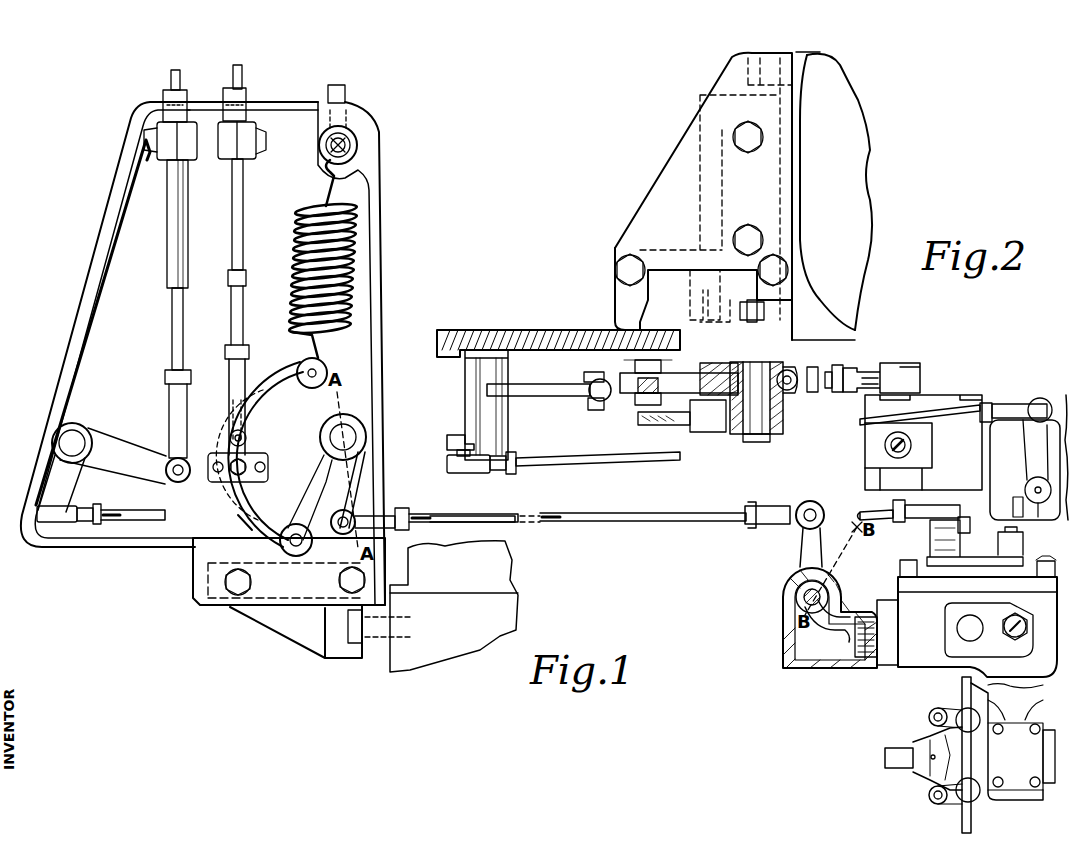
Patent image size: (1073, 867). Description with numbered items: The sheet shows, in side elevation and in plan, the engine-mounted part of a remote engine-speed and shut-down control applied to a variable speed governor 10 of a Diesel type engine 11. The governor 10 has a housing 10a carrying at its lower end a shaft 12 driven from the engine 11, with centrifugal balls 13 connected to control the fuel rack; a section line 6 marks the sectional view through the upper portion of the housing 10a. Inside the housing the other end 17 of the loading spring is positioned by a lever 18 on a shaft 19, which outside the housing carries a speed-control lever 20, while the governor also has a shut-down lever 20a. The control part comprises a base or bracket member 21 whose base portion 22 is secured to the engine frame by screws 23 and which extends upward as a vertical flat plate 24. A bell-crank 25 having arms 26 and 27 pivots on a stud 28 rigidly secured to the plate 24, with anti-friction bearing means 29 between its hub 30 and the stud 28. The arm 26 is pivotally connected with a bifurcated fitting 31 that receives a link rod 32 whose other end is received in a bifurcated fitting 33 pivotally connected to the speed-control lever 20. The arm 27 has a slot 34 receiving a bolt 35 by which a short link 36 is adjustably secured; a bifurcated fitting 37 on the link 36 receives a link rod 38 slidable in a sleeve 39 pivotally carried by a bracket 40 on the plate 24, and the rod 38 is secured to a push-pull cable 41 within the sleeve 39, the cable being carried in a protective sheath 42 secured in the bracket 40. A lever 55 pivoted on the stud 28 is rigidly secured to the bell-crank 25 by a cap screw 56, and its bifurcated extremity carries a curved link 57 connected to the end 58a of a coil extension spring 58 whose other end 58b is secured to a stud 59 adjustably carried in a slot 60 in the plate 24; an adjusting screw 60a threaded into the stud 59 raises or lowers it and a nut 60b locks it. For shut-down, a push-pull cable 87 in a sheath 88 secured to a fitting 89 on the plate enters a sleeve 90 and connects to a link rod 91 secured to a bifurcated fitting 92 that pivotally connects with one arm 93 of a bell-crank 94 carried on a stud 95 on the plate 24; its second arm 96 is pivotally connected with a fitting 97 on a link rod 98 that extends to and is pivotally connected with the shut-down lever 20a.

In FIG. 2, the section line 6- 6 is at (702, 638).
In FIG. 2, the variable speed governor 10 is at (816, 724).
In FIG. 2, the housing 10a is at (933, 660).
In FIG. 1, the Diesel type engine 11 is at (490, 558).
In FIG. 2, the Diesel type engine 11 is at (860, 312).
In FIG. 2, the shaft 12 is at (884, 754).
In FIG. 2, the centrifugal balls 13 is at (955, 710).
In FIG. 2, the other end of the coil spring 17 is at (862, 660).
In FIG. 2, the lever 18 is at (827, 633).
In FIG. 2, the shaft 19 is at (796, 597).
In FIG. 2, the speed-control lever 20 is at (800, 545).
In FIG. 2, the shut-down lever 20a is at (1035, 460).
In FIG. 1, the base or bracket member 21 is at (394, 271).
In FIG. 2, the base or bracket member 21 is at (492, 326).
In FIG. 1, the base portion 22 is at (278, 620).
In FIG. 1, the screws 23 is at (356, 642).
In FIG. 1, the vertical flat plate 24 is at (130, 300).
In FIG. 2, the vertical flat plate 24 is at (560, 338).
In FIG. 1, the bell-crank 25 is at (376, 452).
In FIG. 1, the arm 26 is at (370, 480).
In FIG. 1, the arm 27 is at (263, 454).
In FIG. 2, the arm 27 is at (684, 373).
In FIG. 1, the stud 28 is at (358, 430).
In FIG. 2, the stud 28 is at (752, 430).
In FIG. 2, the anti-friction bearing means 29 is at (792, 368).
In FIG. 2, the hub 30 is at (722, 366).
In FIG. 1, the bifurcated fitting 31 is at (398, 514).
In FIG. 2, the bifurcated fitting 31 is at (808, 392).
In FIG. 1, the link rod 32 is at (460, 512).
In FIG. 2, the link rod 32 is at (466, 515).
In FIG. 2, the bifurcated fitting 33 is at (873, 366).
In FIG. 1, the slot 34 is at (272, 462).
In FIG. 1, the bolt 35 is at (234, 448).
In FIG. 2, the bolt 35 is at (640, 405).
In FIG. 1, the short link 36 is at (236, 478).
In FIG. 2, the short link 36 is at (660, 400).
In FIG. 1, the bifurcated fitting 37 is at (232, 392).
In FIG. 1, the link rod 38 is at (246, 310).
In FIG. 1, the sleeve 39 is at (244, 226).
In FIG. 1, the bracket 40 is at (250, 152).
In FIG. 1, the push-pull cable 41 is at (242, 76).
In FIG. 1, the protective sheath 42 is at (248, 96).
In FIG. 1, the lever 55 is at (322, 530).
In FIG. 2, the lever 55 is at (708, 432).
In FIG. 1, the cap screw 56 is at (318, 470).
In FIG. 1, the curved link 57 is at (262, 520).
In FIG. 2, the curved link 57 is at (690, 425).
In FIG. 1, the coil extension spring 58 is at (352, 238).
In FIG. 1, the end of the coil extension spring 58a is at (320, 356).
In FIG. 1, the other end of the coil extension spring 58b is at (336, 188).
In FIG. 1, the stud 59 is at (352, 148).
In FIG. 1, the slot 60 is at (346, 140).
In FIG. 1, the adjusting screw 60a is at (345, 92).
In FIG. 2, the nut 60b is at (750, 302).
In FIG. 1, the push-pull cable 87 is at (170, 78).
In FIG. 1, the sheath 88 is at (162, 103).
In FIG. 1, the fitting 89 is at (163, 150).
In FIG. 1, the sleeve 90 is at (166, 256).
In FIG. 1, the link rod 91 is at (172, 334).
In FIG. 1, the bifurcated fitting 92 is at (172, 405).
In FIG. 2, the bifurcated fitting 92 is at (594, 410).
In FIG. 1, the arm 93 is at (148, 472).
In FIG. 2, the arm 93 is at (546, 384).
In FIG. 1, the bell-crank 94 is at (88, 415).
In FIG. 2, the bell-crank 94 is at (522, 414).
In FIG. 1, the stud 95 is at (60, 436).
In FIG. 1, the second arm 96 is at (70, 486).
In FIG. 2, the second arm 96 is at (460, 436).
In FIG. 1, the fitting 97 is at (88, 525).
In FIG. 2, the fitting 97 is at (498, 470).
In FIG. 1, the link rod 98 is at (140, 522).
In FIG. 2, the link rod 98 is at (588, 456).